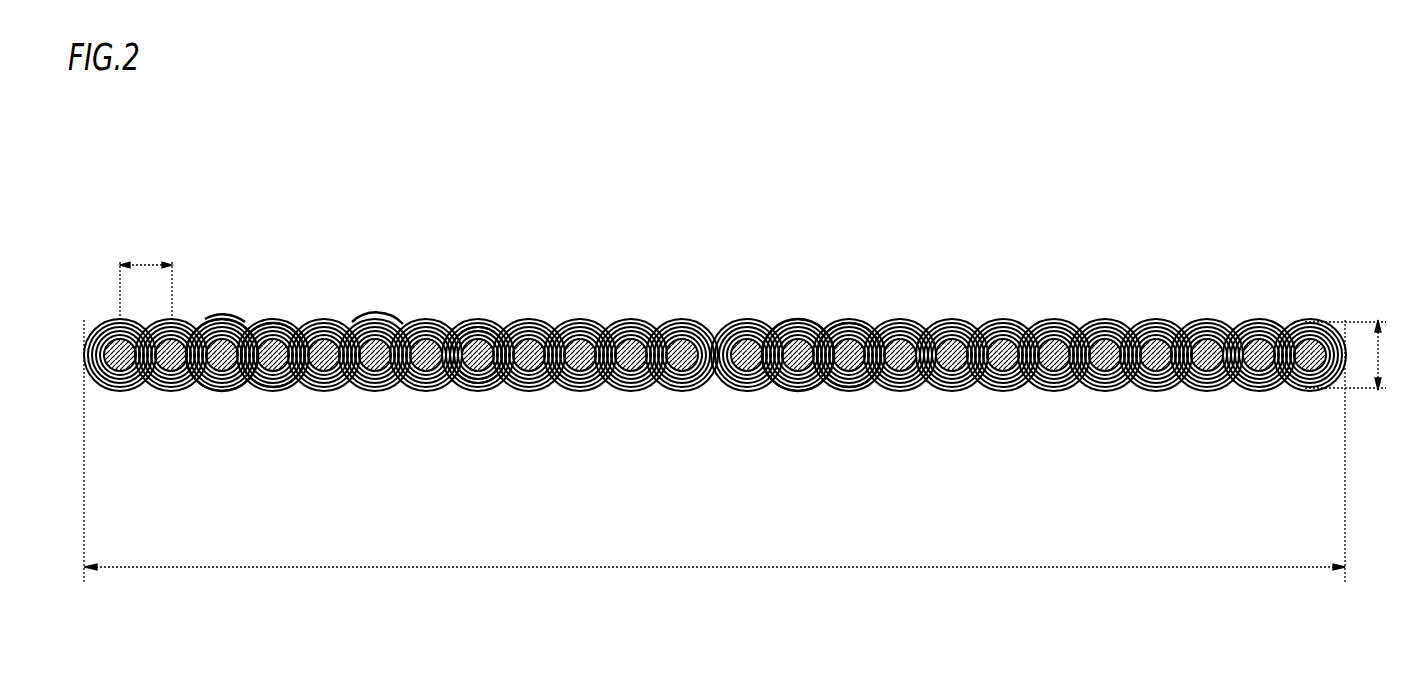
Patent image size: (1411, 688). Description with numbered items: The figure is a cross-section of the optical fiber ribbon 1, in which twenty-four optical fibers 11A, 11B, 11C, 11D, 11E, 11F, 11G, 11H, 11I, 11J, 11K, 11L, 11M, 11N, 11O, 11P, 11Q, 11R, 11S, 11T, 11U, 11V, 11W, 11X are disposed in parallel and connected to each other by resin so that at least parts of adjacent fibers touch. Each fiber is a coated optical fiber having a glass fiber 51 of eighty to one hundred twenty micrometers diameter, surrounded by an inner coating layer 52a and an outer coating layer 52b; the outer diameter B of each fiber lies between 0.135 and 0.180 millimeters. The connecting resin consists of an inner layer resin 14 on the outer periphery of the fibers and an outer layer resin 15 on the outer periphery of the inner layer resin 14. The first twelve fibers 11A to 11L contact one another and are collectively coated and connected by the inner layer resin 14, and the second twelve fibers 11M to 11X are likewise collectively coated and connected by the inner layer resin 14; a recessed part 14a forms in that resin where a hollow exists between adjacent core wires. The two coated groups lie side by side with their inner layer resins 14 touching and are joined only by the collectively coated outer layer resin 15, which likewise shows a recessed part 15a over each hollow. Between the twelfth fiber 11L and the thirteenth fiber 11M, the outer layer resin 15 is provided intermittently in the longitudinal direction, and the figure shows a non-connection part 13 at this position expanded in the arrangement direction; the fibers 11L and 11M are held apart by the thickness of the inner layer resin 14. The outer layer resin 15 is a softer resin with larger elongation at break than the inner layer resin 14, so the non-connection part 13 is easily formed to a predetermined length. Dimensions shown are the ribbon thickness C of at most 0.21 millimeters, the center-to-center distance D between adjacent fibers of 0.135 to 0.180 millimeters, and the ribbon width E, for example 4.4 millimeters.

The optical fiber ribbon 1 is at (937, 170).
The optical fiber 11A is at (108, 393).
The optical fiber 11B is at (159, 393).
The optical fiber 11C is at (210, 393).
The optical fiber 11D is at (261, 393).
The optical fiber 11E is at (312, 393).
The optical fiber 11F is at (363, 393).
The optical fiber 11G is at (414, 393).
The optical fiber 11H is at (466, 393).
The optical fiber 11I is at (517, 393).
The optical fiber 11J is at (568, 393).
The optical fiber 11K is at (619, 393).
The optical fiber 11L is at (670, 393).
The optical fiber 11M is at (735, 393).
The optical fiber 11N is at (786, 393).
The optical fiber 11O is at (837, 393).
The optical fiber 11P is at (888, 393).
The optical fiber 11Q is at (940, 393).
The optical fiber 11R is at (991, 393).
The optical fiber 11S is at (1042, 393).
The optical fiber 11T is at (1093, 393).
The optical fiber 11U is at (1144, 393).
The optical fiber 11V is at (1195, 393).
The optical fiber 11W is at (1247, 393).
The optical fiber 11X is at (1298, 393).
The non-connection part 13 is at (717, 312).
The inner layer resin 14 is at (232, 318).
The recessed part 14a is at (245, 318).
The outer layer resin 15 is at (297, 318).
The recessed part 15a is at (403, 318).
The glass fiber 51 is at (463, 318).
The inner coating layer 52a is at (475, 318).
The outer coating layer 52b is at (495, 318).
The outer diameter of the optical fibers B is at (598, 392).
The thickness of the optical fiber ribbon C is at (1351, 355).
The distance between centers of adjacent optical fibers D is at (146, 276).
The width of the optical fiber ribbon E is at (714, 460).